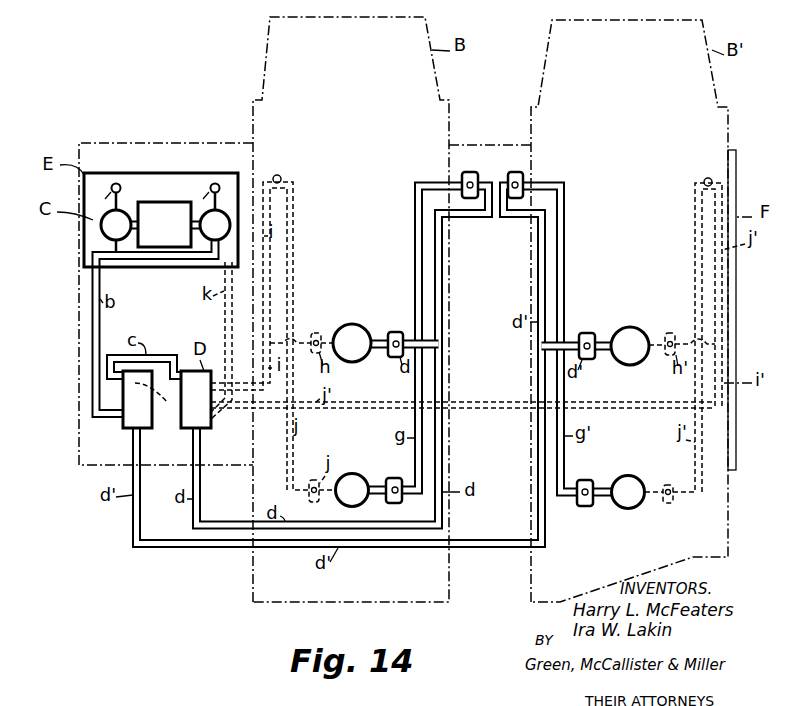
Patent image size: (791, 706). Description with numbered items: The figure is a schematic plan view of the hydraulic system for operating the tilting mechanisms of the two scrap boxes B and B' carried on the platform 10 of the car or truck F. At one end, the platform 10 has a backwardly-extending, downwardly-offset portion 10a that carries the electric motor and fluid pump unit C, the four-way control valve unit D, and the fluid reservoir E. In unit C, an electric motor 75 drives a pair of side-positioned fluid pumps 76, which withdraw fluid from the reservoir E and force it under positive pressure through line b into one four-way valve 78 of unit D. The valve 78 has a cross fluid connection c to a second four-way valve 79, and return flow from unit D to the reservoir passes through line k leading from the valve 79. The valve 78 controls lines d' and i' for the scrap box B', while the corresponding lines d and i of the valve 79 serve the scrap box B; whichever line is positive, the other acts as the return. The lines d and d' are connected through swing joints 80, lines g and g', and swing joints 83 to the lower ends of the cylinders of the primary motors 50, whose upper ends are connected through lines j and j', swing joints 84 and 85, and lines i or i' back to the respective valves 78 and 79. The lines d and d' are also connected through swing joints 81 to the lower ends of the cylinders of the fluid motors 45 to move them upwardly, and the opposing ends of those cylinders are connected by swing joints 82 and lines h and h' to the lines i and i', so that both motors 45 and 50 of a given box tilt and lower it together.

The platform 10 is at (736, 442).
The backwardly-extending, downwardly-offset portion 10a is at (79, 395).
The fluid motor 45 is at (352, 324).
The primary motor 50 is at (357, 474).
The electric motor 75 is at (180, 203).
The fluid pumps 76 is at (101, 231).
The four-way valve 78 is at (123, 428).
The second four-way valve 79 is at (211, 430).
The swing joints 80 is at (470, 172).
The swing joints 81 is at (394, 332).
The swing joints 82 is at (315, 333).
The swing joints 83 is at (394, 478).
The swing joints 84 is at (316, 504).
The swing joints 85 is at (282, 180).